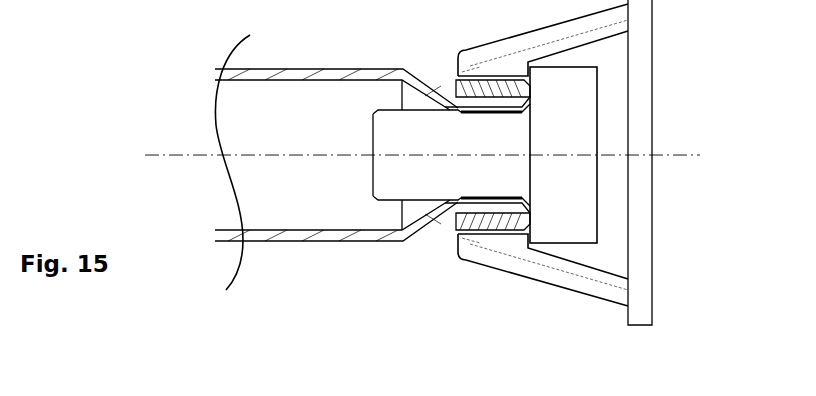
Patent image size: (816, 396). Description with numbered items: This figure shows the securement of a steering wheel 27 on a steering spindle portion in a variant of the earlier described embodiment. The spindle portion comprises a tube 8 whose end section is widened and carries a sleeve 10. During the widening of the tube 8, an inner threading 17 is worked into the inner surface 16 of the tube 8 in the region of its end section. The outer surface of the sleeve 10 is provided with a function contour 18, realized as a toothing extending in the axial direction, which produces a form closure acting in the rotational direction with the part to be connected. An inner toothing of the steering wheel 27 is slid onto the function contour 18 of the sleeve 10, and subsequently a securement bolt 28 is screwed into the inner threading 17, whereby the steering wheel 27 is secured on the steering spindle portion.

The tube 8 is at (282, 73).
The sleeve 10 is at (481, 224).
The inner surface 16 is at (510, 115).
The inner threading 17 is at (465, 224).
The function contour 18 is at (511, 232).
The steering wheel 27 is at (571, 272).
The securement bolt 28 is at (580, 125).